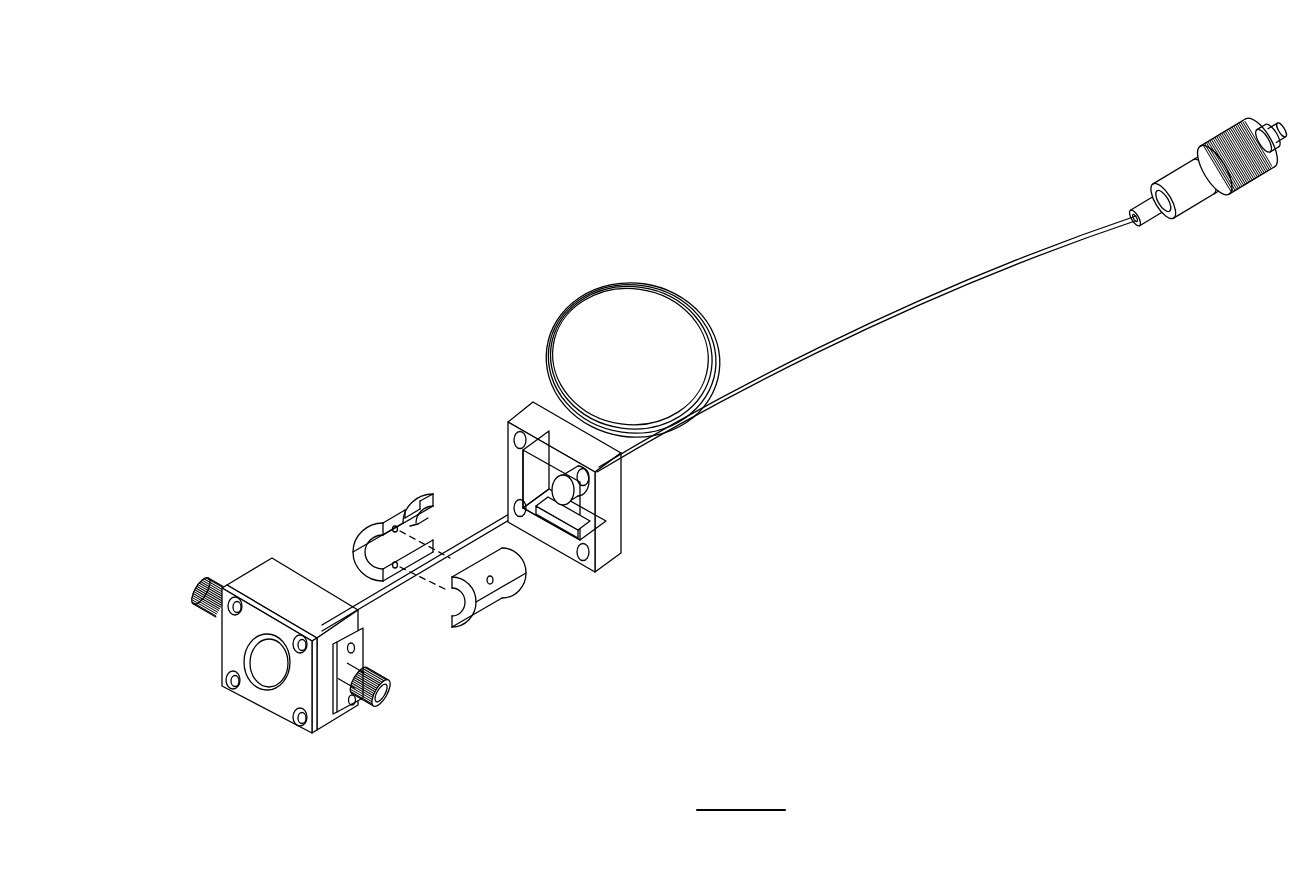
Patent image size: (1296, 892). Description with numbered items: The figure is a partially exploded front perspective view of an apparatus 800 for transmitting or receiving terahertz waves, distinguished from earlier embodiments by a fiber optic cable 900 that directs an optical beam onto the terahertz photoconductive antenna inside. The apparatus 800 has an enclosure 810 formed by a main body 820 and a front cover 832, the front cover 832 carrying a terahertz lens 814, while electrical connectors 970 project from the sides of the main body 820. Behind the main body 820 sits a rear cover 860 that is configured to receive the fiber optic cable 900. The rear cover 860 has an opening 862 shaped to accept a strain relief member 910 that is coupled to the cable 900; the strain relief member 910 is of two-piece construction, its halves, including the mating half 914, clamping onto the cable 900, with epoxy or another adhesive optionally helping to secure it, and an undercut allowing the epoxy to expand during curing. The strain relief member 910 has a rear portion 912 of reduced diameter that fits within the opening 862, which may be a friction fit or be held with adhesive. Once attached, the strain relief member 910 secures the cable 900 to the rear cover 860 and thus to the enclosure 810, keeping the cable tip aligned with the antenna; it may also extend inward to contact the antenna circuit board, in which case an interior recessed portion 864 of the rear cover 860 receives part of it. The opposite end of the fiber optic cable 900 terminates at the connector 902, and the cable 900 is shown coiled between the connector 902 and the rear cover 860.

The apparatus for transmitting or receiving terahertz waves 800 is at (408, 212).
The enclosure 810 is at (293, 557).
The terahertz lens 814 is at (268, 672).
The main body 820 is at (263, 578).
The front cover 832 is at (268, 703).
The rear cover 860 is at (608, 523).
The opening 862 is at (550, 483).
The interior recessed portion 864 is at (570, 522).
The fiber optic cable 900 is at (828, 340).
The fiber connector 902 is at (1187, 180).
The strain relief member 910 is at (372, 495).
The rear portion 912 is at (425, 523).
The clamp half 914 is at (512, 585).
The electrical connectors 970 is at (200, 588).